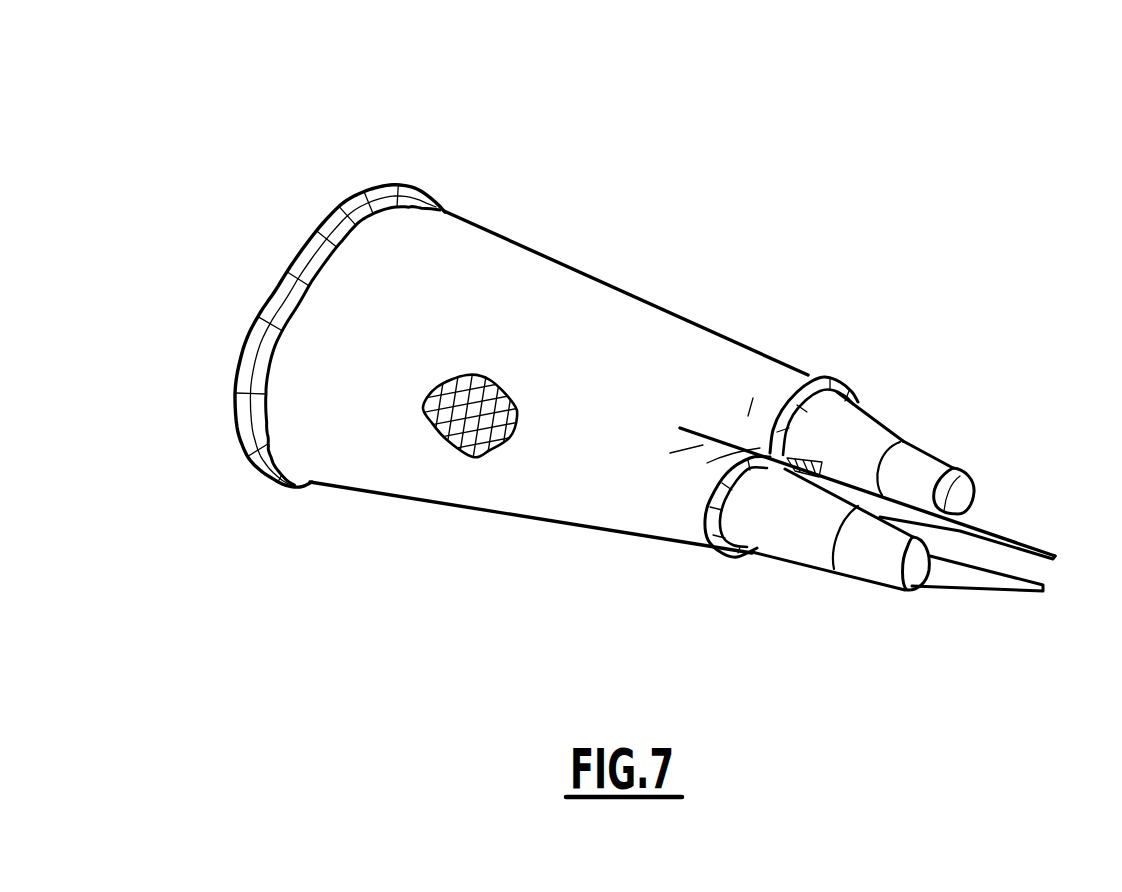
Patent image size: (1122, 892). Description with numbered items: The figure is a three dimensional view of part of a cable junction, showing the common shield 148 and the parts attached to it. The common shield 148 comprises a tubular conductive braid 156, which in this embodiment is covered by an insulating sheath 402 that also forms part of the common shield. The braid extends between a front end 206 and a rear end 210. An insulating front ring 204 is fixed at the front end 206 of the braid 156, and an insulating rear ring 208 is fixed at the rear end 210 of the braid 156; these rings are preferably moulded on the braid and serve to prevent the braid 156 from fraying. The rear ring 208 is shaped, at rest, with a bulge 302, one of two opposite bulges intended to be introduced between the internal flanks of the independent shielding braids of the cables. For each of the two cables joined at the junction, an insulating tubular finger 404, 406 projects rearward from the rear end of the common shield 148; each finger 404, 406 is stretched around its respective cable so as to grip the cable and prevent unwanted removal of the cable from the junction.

The common shield 148 is at (686, 230).
The insulating front ring 204 is at (364, 198).
The front end 206 is at (266, 290).
The insulating sheath 402 is at (564, 292).
The tubular conductive braid 156 is at (473, 394).
The bulge 302 is at (745, 443).
The insulating rear ring 208 is at (825, 381).
The rear end 210 is at (863, 394).
The insulating tubular finger 404 is at (947, 468).
The insulating tubular finger 406 is at (800, 546).